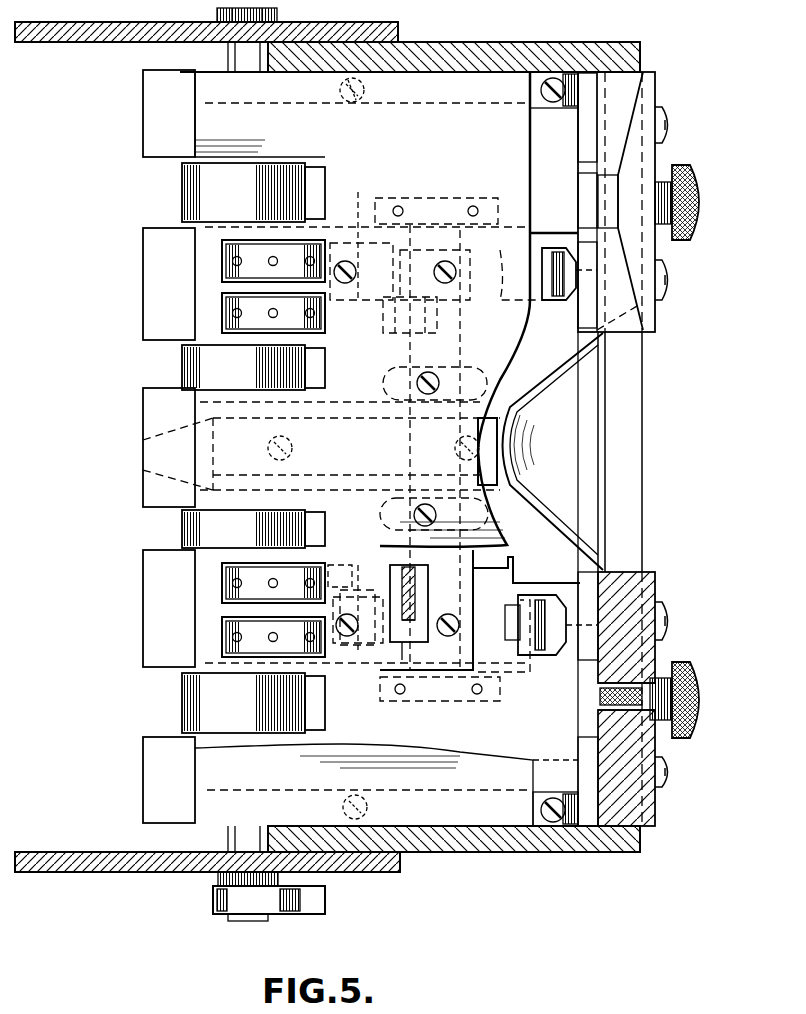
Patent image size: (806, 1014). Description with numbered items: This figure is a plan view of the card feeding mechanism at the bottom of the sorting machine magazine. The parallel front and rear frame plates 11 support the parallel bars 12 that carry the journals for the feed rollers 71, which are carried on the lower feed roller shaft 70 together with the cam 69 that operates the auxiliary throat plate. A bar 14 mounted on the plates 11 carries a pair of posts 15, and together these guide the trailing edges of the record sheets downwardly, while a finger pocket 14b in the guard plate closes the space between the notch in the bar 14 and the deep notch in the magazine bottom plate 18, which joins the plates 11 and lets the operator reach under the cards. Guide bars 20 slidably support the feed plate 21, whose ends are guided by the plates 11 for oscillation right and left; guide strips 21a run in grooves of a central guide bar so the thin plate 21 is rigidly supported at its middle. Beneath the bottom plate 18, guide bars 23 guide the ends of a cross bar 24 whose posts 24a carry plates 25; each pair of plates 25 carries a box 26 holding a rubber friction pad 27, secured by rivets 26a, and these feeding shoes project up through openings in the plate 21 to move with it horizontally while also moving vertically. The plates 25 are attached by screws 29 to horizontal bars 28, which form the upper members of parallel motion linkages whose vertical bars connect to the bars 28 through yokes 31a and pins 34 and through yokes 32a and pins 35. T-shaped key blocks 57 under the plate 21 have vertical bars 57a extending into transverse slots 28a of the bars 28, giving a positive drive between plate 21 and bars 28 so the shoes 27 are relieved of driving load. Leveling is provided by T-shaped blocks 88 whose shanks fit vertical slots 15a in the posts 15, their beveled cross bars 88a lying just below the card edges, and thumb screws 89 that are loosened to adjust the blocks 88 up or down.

The frame plate 11 is at (526, 56).
The bar 12 is at (395, 40).
The bar 14 is at (627, 418).
The finger pocket 14b is at (550, 405).
The post 15 is at (628, 255).
The vertical slot 15a is at (670, 760).
The magazine bottom plate 18 is at (567, 773).
The guide bar 20 is at (573, 98).
The feed plate 21 is at (515, 135).
The guide strip 21a is at (215, 425).
The guide bar 23 is at (433, 197).
The cross bar 24 is at (398, 230).
The post 24a is at (385, 383).
The plate 25 is at (500, 360).
The box 26 is at (237, 262).
The rivet 26a is at (273, 640).
The friction pad 27 is at (245, 628).
The horizontal bar 28 is at (493, 260).
The slot 28a is at (409, 645).
The screw 29 is at (332, 247).
The yoke 31a is at (606, 698).
The yoke 32a is at (355, 409).
The pin 34 is at (538, 252).
The pin 35 is at (375, 298).
The key block 57 is at (393, 338).
The vertical bar 57a is at (385, 563).
The cam 69 is at (300, 902).
The lower feed roller shaft 70 is at (245, 838).
The feed roller 71 is at (210, 200).
The T-shaped block 88 is at (672, 625).
The beveled portion 88a is at (590, 185).
The thumb screw 89 is at (698, 183).